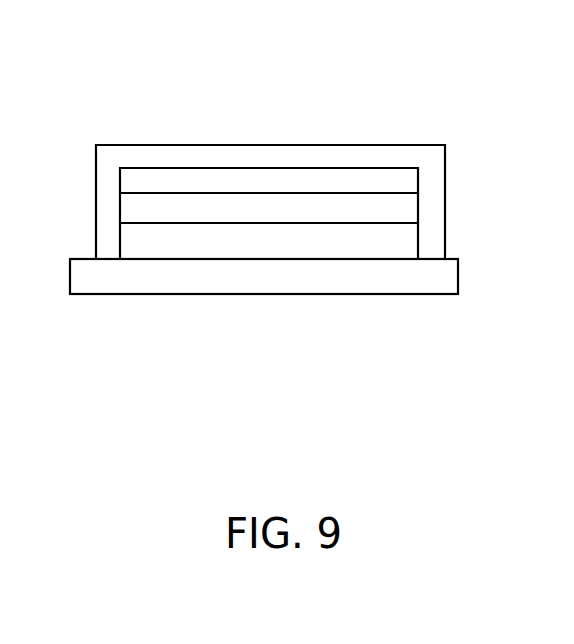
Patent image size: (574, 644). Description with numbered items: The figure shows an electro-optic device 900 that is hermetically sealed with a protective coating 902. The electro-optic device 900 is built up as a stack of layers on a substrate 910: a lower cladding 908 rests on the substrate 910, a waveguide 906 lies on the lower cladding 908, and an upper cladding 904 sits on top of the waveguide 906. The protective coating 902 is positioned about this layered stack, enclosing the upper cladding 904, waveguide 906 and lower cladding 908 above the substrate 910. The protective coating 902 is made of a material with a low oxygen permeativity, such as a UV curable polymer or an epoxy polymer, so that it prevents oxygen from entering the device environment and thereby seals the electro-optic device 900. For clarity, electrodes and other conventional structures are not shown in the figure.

The electro-optic device 900 is at (295, 207).
The protective coating 902 is at (381, 156).
The upper cladding 904 is at (256, 173).
The waveguide 906 is at (201, 216).
The lower cladding 908 is at (271, 241).
The substrate 910 is at (373, 272).